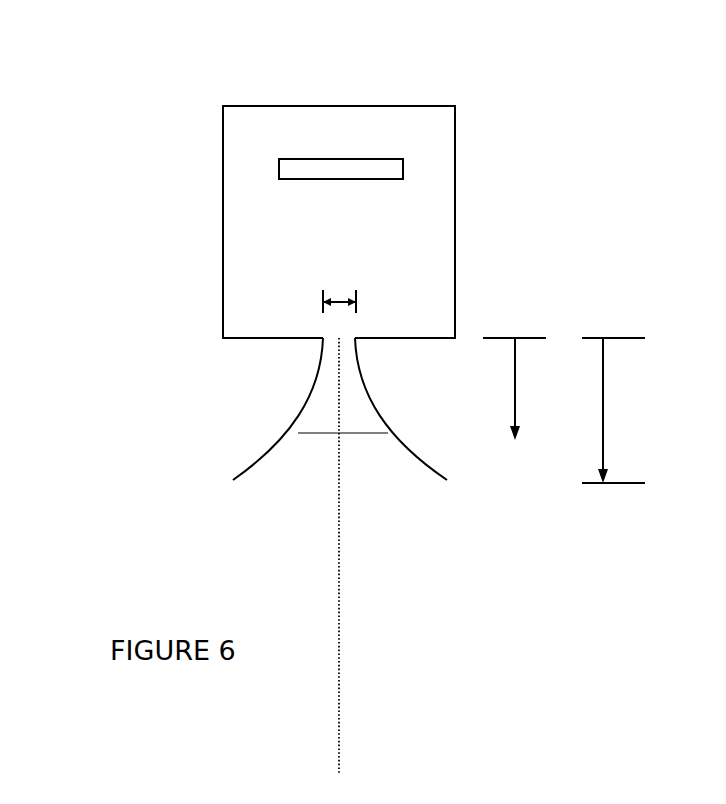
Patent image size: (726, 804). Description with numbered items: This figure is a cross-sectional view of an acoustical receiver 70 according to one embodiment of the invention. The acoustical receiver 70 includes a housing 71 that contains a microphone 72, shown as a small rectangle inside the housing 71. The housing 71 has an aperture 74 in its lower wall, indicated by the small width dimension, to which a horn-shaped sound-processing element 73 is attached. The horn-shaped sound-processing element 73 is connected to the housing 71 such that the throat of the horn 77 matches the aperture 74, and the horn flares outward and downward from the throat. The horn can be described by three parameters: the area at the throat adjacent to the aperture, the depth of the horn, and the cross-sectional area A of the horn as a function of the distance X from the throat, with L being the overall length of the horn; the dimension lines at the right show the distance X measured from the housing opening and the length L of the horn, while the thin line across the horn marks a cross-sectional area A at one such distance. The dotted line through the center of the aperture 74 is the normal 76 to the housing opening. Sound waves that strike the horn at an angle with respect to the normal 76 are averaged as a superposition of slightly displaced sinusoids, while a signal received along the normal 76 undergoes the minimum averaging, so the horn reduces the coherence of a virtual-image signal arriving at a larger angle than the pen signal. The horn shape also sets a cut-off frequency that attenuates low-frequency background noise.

The acoustical receiver 70 is at (100, 108).
The housing 71 is at (455, 190).
The microphone 72 is at (350, 166).
The horn-shaped sound-processing element 73 is at (307, 407).
The aperture 74 is at (337, 293).
The normal 76 is at (339, 697).
The throat of the horn 77 is at (333, 348).
The cross-sectional area of the horn A is at (361, 446).
The distance from the throat X is at (515, 389).
The length of the horn L is at (613, 410).